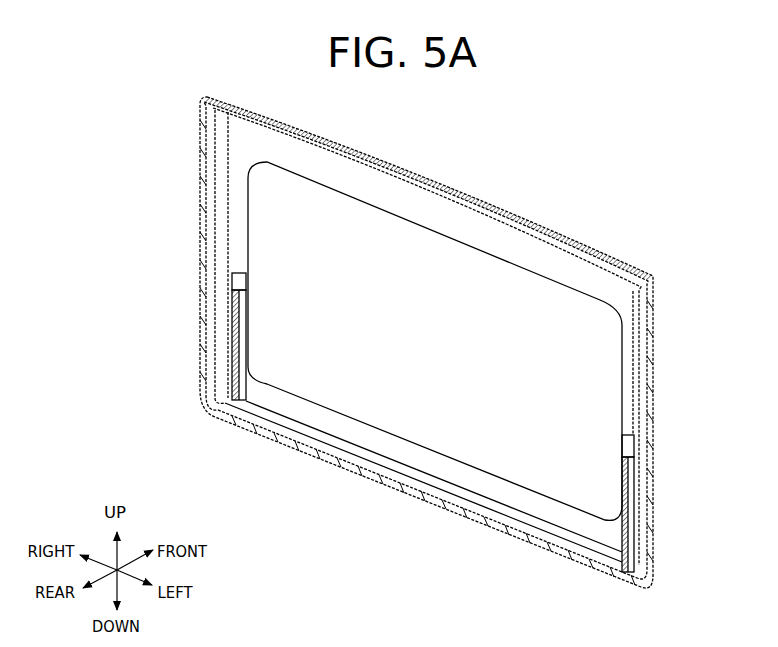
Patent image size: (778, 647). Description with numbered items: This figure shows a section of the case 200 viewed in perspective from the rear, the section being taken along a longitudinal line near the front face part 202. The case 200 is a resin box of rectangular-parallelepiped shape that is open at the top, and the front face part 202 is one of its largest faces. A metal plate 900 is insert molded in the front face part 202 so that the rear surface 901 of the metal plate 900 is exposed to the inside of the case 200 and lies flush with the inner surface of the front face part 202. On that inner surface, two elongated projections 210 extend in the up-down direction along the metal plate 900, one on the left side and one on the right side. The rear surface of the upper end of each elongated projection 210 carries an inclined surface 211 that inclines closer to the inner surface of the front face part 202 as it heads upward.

The case 200 is at (500, 205).
The front face part 202 is at (423, 203).
The elongated projection 210 is at (238, 357).
The inclined surface 211 is at (233, 276).
The metal plate 900 is at (337, 410).
The rear surface 901 is at (427, 427).